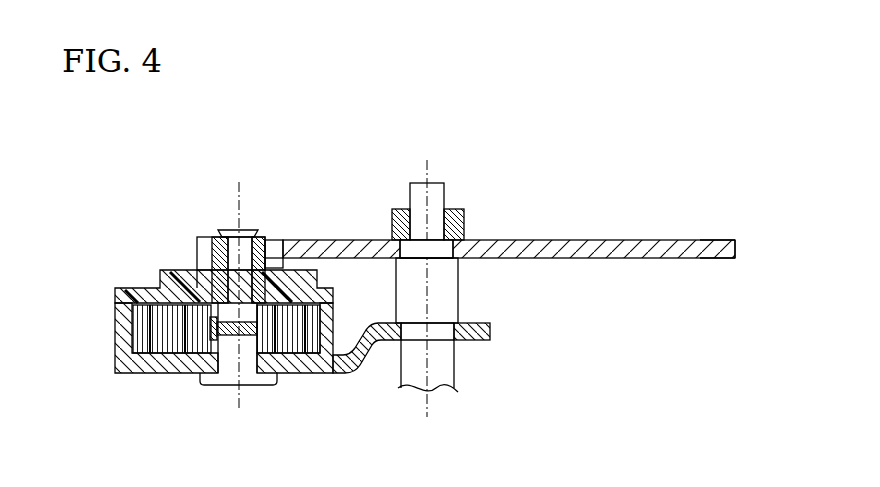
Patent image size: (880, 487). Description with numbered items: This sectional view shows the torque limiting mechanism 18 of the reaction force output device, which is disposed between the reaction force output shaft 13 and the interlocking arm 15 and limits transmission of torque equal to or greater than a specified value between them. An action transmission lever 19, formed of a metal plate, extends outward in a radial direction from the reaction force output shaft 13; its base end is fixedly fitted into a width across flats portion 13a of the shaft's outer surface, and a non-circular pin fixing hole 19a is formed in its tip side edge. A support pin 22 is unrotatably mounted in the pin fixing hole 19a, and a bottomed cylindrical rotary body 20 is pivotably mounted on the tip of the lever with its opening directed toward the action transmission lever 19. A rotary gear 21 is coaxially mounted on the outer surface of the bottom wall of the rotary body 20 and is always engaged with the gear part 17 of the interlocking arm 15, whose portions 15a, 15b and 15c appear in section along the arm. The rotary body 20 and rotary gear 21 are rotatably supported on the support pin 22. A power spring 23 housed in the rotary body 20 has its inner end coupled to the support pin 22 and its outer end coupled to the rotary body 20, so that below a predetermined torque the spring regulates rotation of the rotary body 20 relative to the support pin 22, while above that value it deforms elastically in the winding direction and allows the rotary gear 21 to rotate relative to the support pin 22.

The reaction force output shaft 13 is at (442, 386).
The width across flats portion 13a is at (465, 340).
The interlocking arm 15 is at (541, 236).
The plate shaft hole portion 15a is at (482, 259).
The plate end portion 15b is at (682, 252).
The plate bent portion 15c is at (296, 241).
The gear part 17 is at (275, 243).
The torque limiting mechanism 18 is at (152, 266).
The action transmission lever 19 is at (338, 373).
The pin fixing hole 19a is at (232, 384).
The rotary body 20 is at (118, 318).
The rotary gear 21 is at (205, 248).
The support pin 22 is at (247, 360).
The power spring 23 is at (178, 356).